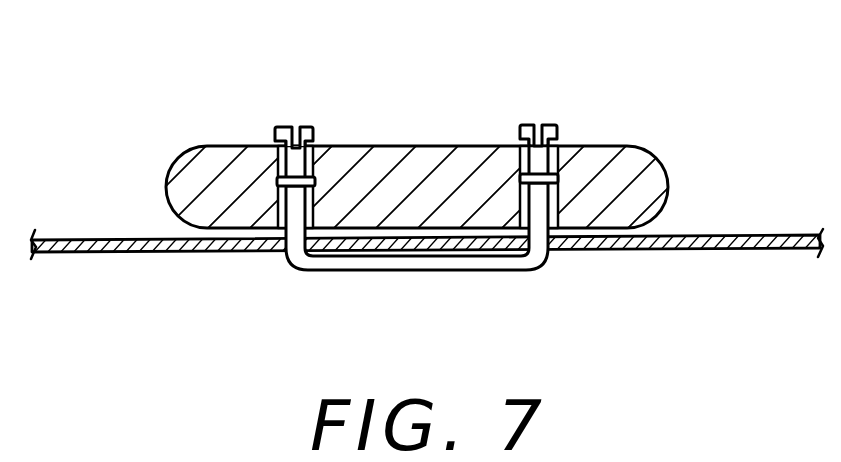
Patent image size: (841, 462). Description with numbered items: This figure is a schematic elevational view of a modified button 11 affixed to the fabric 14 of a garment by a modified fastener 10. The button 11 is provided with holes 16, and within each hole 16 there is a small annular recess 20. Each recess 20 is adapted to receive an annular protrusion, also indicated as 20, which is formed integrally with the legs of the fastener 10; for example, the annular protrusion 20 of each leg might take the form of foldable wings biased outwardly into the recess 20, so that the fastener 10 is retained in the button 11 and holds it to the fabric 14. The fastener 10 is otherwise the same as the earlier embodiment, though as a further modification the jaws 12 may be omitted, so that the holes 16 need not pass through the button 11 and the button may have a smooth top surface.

The fastener 10 is at (350, 265).
The button 11 is at (180, 160).
The jaws 12 is at (527, 130).
The fabric 14 is at (688, 249).
The hole 16 is at (277, 170).
The annular recess 20 is at (278, 181).